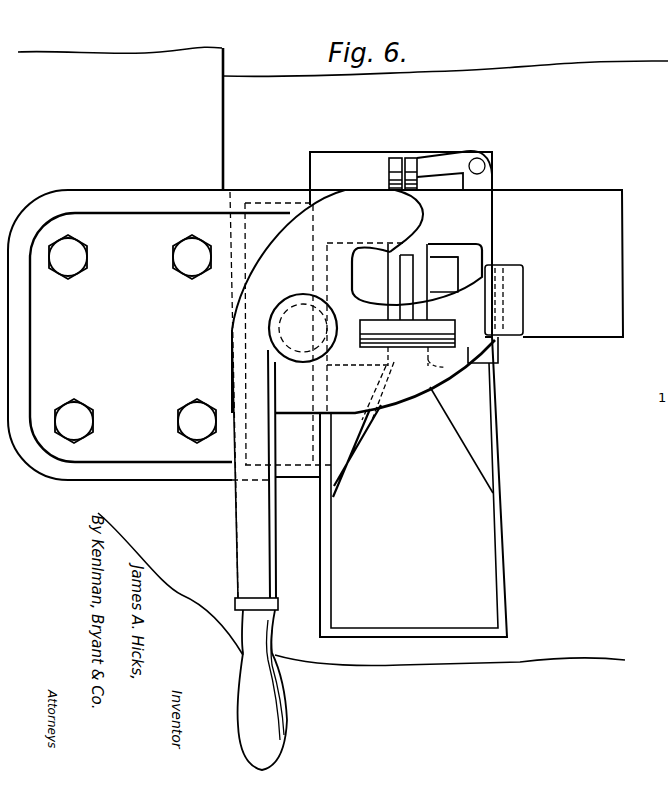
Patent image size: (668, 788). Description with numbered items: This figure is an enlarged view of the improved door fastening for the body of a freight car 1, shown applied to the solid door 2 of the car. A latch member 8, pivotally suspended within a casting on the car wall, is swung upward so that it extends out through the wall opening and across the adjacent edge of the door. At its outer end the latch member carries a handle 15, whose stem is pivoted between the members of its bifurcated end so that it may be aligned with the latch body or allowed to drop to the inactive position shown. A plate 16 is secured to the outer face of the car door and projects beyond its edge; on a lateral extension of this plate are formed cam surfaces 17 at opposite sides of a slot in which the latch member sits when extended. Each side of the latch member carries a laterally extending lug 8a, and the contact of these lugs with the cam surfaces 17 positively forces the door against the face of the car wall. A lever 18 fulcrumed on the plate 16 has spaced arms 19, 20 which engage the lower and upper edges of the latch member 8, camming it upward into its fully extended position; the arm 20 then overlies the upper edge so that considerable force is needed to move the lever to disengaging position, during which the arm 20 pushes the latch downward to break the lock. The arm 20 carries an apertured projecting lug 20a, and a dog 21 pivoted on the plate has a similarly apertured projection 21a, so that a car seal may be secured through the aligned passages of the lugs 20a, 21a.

The body of a freight car 1 is at (556, 478).
The solid door 2 is at (155, 119).
The latch member 8 is at (392, 278).
The laterally extending lug 8a is at (448, 273).
The handle 15 is at (413, 348).
The plate 16 is at (170, 394).
The cam surfaces 17 is at (478, 357).
The lever 18 is at (237, 338).
The arm 19 is at (438, 367).
The arm 20 is at (363, 301).
The projecting lug 20a is at (395, 157).
The dog 21 is at (452, 157).
The apertured projection 21a is at (409, 157).